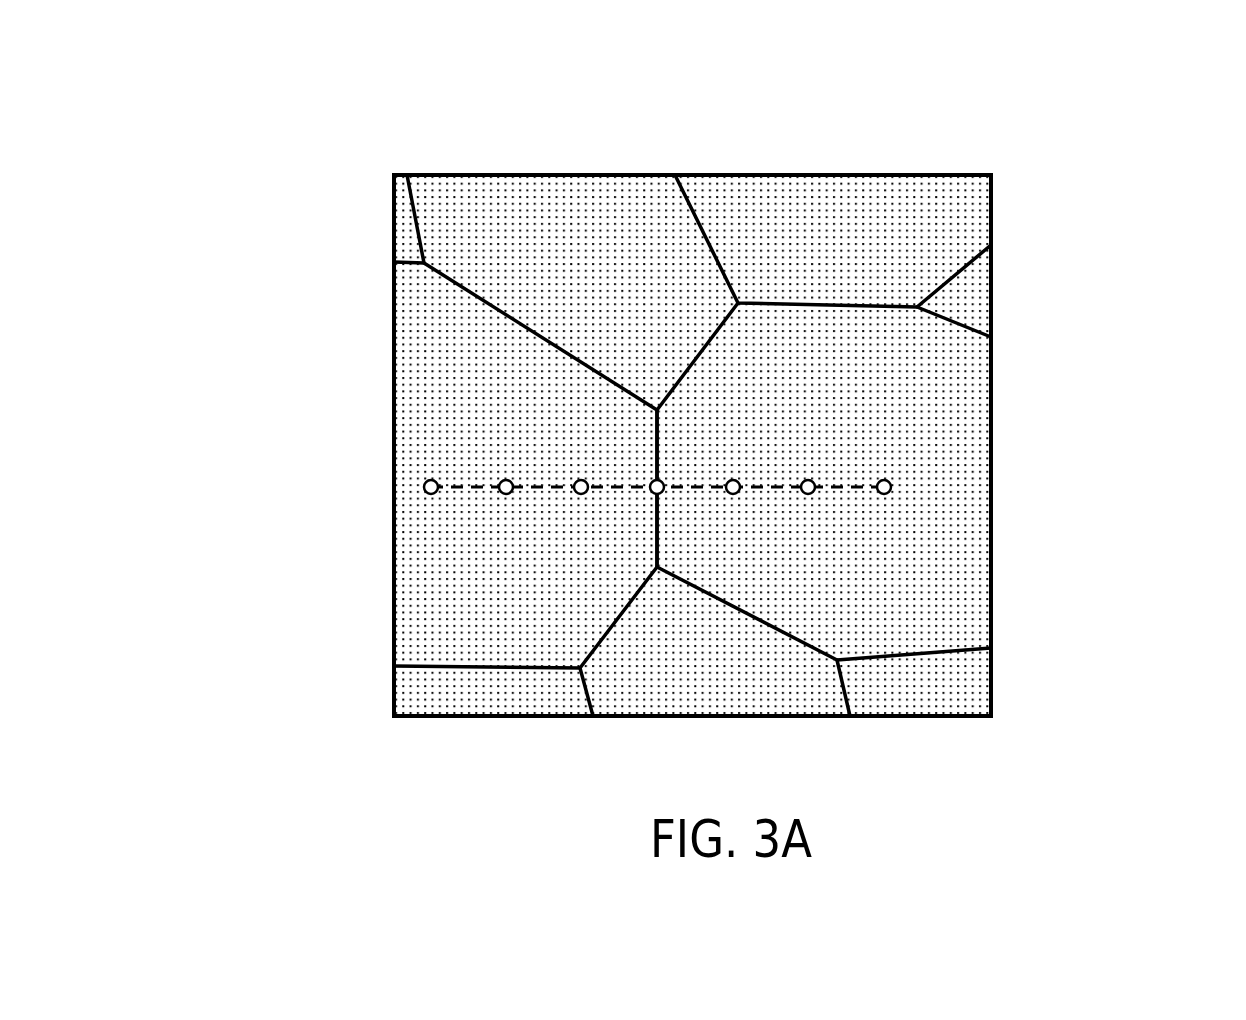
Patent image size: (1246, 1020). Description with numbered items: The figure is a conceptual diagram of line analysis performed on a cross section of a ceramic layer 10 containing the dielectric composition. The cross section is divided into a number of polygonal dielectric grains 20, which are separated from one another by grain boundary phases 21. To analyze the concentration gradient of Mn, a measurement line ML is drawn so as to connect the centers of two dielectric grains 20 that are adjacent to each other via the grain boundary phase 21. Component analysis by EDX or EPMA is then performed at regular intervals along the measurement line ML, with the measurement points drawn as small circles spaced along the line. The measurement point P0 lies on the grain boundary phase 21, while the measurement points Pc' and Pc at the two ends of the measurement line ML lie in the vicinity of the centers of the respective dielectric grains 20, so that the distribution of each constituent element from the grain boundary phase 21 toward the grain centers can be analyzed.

The ceramic layer 10 is at (993, 200).
The dielectric grain 20 is at (443, 350).
The grain boundary phase 21 is at (662, 543).
The measurement line ML is at (853, 493).
The measurement point P0 is at (653, 490).
The measurement point Pc' is at (313, 422).
The measurement point Pc is at (1052, 467).